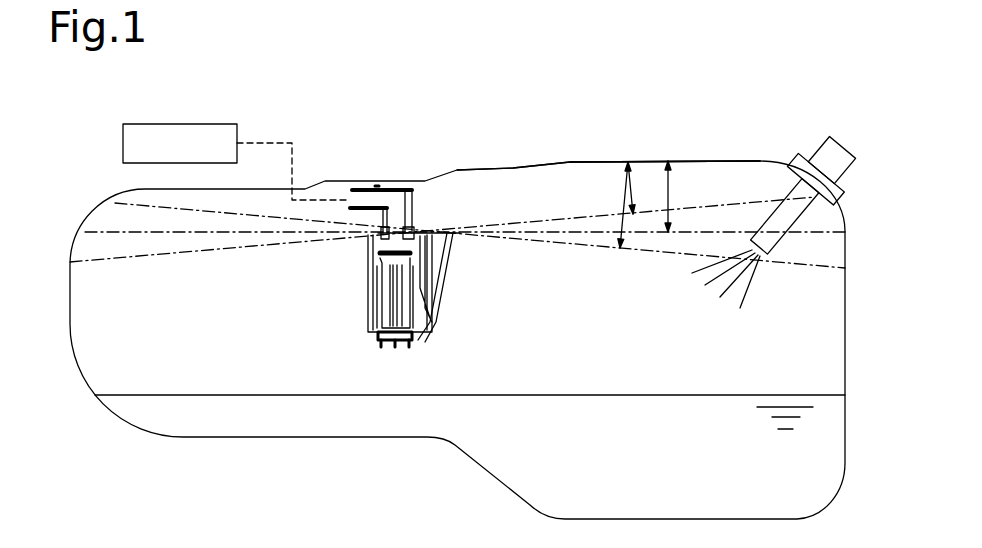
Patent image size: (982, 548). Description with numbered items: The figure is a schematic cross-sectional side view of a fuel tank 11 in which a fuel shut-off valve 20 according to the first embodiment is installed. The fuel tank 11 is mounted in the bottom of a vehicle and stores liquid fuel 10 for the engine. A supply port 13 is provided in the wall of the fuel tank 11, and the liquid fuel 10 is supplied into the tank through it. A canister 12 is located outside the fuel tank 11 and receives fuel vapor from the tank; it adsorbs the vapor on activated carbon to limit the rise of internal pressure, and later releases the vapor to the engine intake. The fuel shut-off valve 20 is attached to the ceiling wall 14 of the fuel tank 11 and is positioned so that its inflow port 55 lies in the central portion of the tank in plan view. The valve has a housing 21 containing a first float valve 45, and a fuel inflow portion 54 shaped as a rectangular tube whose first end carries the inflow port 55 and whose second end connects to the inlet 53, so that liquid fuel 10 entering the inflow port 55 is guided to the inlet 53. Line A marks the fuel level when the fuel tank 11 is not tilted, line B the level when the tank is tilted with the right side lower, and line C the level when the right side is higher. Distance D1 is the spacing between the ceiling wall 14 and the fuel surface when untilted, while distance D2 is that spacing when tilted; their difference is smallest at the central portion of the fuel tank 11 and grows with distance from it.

The liquid fuel 10 is at (690, 407).
The fuel tank 11 is at (665, 161).
The canister 12 is at (200, 124).
The supply port 13 is at (757, 263).
The ceiling wall 14 is at (493, 167).
The fuel shut-off valve 20 is at (412, 286).
The housing 21 is at (368, 315).
The first float valve 45 is at (378, 283).
The inlet 53 is at (437, 295).
The fuel inflow portion 54 is at (452, 256).
The inflow port 55 is at (447, 228).
The line A is at (88, 232).
The line B is at (68, 287).
The line C is at (128, 203).
The distance D1 is at (680, 187).
The distance D2 is at (637, 187).